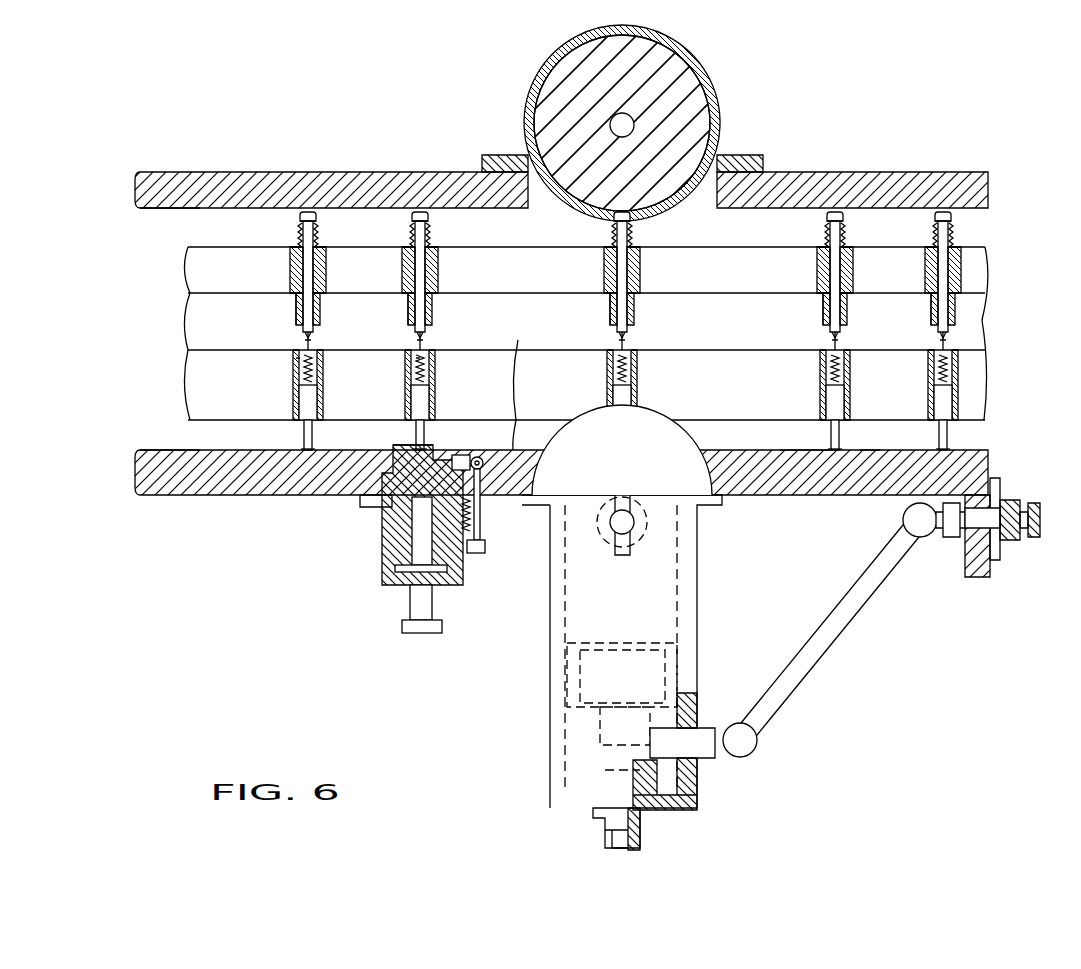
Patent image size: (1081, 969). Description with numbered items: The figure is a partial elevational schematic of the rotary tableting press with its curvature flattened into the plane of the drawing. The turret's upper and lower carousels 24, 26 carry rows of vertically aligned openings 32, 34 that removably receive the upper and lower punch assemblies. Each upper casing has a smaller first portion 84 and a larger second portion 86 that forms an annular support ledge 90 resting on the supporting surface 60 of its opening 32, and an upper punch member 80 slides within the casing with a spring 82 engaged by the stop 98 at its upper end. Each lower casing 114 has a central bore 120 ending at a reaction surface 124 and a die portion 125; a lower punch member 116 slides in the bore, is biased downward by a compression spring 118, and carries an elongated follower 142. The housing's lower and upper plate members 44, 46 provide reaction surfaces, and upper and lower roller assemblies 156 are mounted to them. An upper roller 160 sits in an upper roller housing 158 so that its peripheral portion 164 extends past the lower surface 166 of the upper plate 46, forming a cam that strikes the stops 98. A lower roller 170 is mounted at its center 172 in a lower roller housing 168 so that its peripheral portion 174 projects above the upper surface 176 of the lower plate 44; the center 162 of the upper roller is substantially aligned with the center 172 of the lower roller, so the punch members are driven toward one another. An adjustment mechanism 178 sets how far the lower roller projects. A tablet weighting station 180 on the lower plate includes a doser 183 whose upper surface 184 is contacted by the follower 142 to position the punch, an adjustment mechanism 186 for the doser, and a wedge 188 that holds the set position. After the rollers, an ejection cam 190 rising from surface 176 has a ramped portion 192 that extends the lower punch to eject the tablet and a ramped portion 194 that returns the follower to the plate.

The upper carousel 24 is at (195, 270).
The lower carousel 26 is at (195, 372).
The openings 32 is at (290, 250).
The openings 34 is at (296, 350).
The lower plate member 44 is at (140, 480).
The upper plate member 46 is at (135, 185).
The supporting surface 60 is at (328, 283).
The punch member 80 is at (300, 222).
The spring 82 is at (322, 236).
The first portion 84 is at (320, 315).
The second portion 86 is at (328, 270).
The annular support ledge 90 is at (296, 300).
The stop 98 is at (316, 214).
The casing 114 is at (322, 365).
The punch member 116 is at (300, 405).
The spring 118 is at (1014, 381).
The central bore 120 is at (300, 385).
The reaction surface 124 is at (297, 375).
The die portion 125 is at (318, 340).
The elongated follower 142 is at (300, 432).
The roller assemblies 156 is at (642, 435).
The upper roller housing 158 is at (540, 73).
The upper roller 160 is at (695, 105).
The center 162 is at (612, 122).
The peripheral portion 164 is at (661, 212).
The lower surface 166 is at (165, 210).
The lower roller housing 168 is at (540, 525).
The lower roller 170 is at (705, 540).
The center 172 is at (630, 530).
The peripheral portion 174 is at (640, 440).
The upper surface 176 is at (162, 450).
The adjustment mechanism 178 is at (765, 755).
The tablet weighting station 180 is at (383, 565).
The doser 183 is at (383, 548).
The upper surface 184 is at (418, 450).
The adjustment mechanism 186 is at (418, 636).
The wedge 188 is at (527, 384).
The ejection cam 190 is at (815, 440).
The ramped portion 192 is at (790, 445).
The ramped portion 194 is at (870, 445).